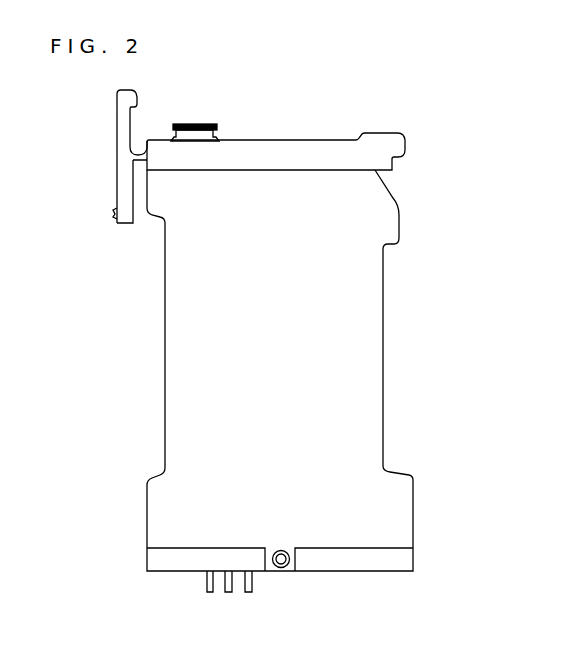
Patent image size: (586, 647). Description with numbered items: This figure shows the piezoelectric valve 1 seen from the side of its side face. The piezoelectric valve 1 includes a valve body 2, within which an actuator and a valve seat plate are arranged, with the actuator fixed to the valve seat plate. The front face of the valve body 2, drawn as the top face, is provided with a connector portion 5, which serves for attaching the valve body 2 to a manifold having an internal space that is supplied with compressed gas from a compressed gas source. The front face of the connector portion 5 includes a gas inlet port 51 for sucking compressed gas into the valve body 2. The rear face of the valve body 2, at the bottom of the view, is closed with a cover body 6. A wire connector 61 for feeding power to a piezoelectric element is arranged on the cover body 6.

The piezoelectric valve 1 is at (508, 118).
The valve body 2 is at (342, 373).
The connector portion 5 is at (307, 148).
The gas inlet port 51 is at (200, 124).
The cover body 6 is at (405, 558).
The wire connector 61 is at (203, 571).